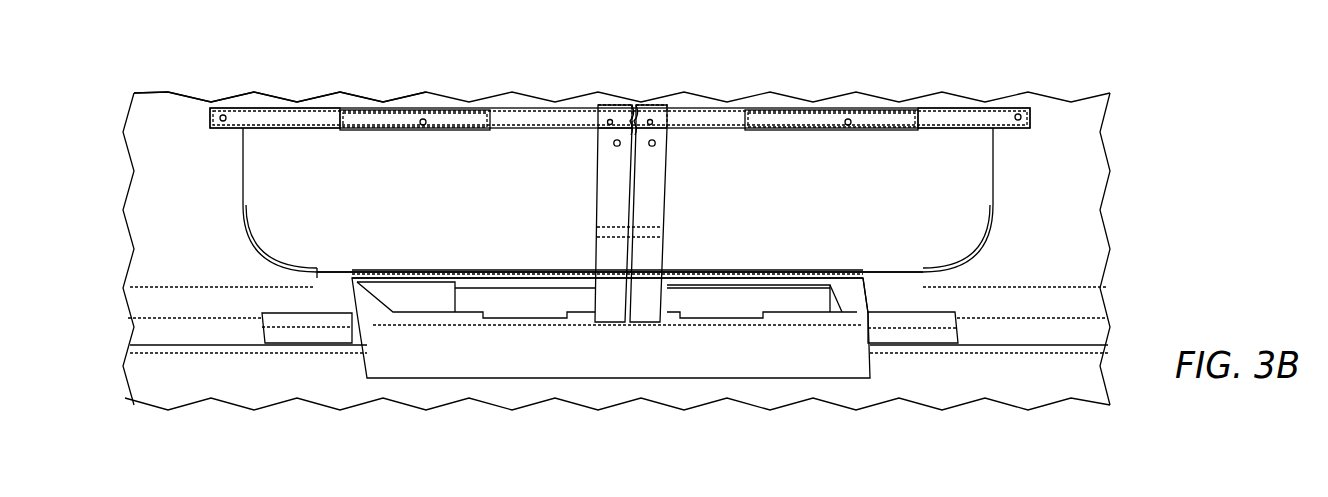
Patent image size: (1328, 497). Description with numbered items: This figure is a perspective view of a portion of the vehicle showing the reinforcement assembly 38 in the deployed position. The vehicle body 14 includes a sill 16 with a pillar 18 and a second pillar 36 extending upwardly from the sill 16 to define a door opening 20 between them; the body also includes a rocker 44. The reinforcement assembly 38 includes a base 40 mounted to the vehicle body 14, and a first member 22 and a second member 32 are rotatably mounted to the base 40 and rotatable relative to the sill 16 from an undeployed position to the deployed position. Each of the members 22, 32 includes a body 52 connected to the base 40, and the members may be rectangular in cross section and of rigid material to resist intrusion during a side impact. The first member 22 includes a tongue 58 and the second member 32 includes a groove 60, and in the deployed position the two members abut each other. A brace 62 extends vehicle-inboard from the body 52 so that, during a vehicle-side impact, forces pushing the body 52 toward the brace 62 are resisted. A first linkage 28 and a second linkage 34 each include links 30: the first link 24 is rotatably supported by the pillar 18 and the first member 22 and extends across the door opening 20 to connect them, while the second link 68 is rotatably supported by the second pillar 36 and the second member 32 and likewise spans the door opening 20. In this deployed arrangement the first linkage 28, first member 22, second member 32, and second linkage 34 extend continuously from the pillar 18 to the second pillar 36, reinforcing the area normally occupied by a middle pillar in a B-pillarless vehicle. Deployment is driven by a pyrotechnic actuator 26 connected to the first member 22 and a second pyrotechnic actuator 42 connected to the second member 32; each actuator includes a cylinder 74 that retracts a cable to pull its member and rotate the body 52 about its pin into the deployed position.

The vehicle body 14 is at (977, 177).
The sill 16 is at (877, 270).
The pillar 18 is at (1102, 140).
The door opening 20 is at (962, 205).
The member 22 is at (650, 205).
The first link 24 is at (980, 117).
The pyrotechnic actuator 26 is at (927, 337).
The first linkage 28 is at (903, 82).
The link 30 is at (532, 117).
The second member 32 is at (613, 205).
The second linkage 34 is at (365, 83).
The second pillar 36 is at (167, 140).
The reinforcement assembly 38 is at (500, 383).
The base 40 is at (402, 378).
The second pyrotechnic actuator 42 is at (308, 337).
The rocker 44 is at (887, 303).
The body 52 is at (613, 167).
The tongue 58 is at (637, 117).
The groove 60 is at (625, 117).
The brace 62 is at (613, 258).
The second link 68 is at (288, 117).
The cylinder 74 is at (265, 332).